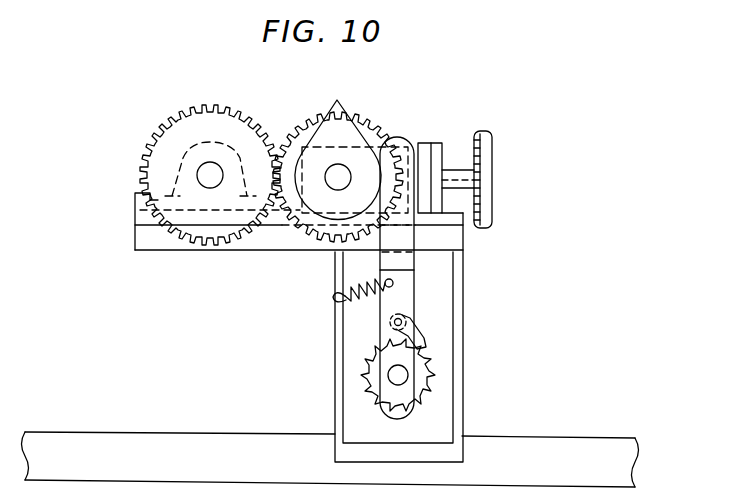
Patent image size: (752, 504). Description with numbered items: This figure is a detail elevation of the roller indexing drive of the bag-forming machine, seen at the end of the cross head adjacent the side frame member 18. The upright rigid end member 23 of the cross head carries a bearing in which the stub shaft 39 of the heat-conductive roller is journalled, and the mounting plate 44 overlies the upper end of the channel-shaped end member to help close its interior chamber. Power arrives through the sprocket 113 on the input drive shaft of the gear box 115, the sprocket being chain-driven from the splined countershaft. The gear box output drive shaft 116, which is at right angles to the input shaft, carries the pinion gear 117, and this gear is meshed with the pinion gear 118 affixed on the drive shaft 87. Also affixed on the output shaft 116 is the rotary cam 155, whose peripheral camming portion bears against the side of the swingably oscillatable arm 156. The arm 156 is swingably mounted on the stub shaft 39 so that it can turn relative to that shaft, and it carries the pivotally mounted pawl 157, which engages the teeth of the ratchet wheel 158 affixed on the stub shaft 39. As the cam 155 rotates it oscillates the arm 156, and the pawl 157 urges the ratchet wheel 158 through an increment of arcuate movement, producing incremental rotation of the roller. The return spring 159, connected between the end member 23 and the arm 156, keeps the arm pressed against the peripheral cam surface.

The side frame member 18 is at (515, 443).
The upright rigid end member 23 is at (462, 292).
The mounting plate 44 is at (150, 239).
The pinion gear 118 is at (177, 122).
The drive shaft 87 is at (208, 190).
The pinion gear 117 is at (297, 125).
The rotary cam 155 is at (335, 115).
The gear box output drive shaft 116 is at (330, 190).
The swingably oscillatable arm 156 is at (398, 140).
The gear box 115 is at (422, 146).
The sprocket 113 is at (485, 133).
The return spring 159 is at (352, 283).
The pawl 157 is at (423, 330).
The ratchet wheel 158 is at (437, 375).
The stub shaft 39 is at (388, 375).